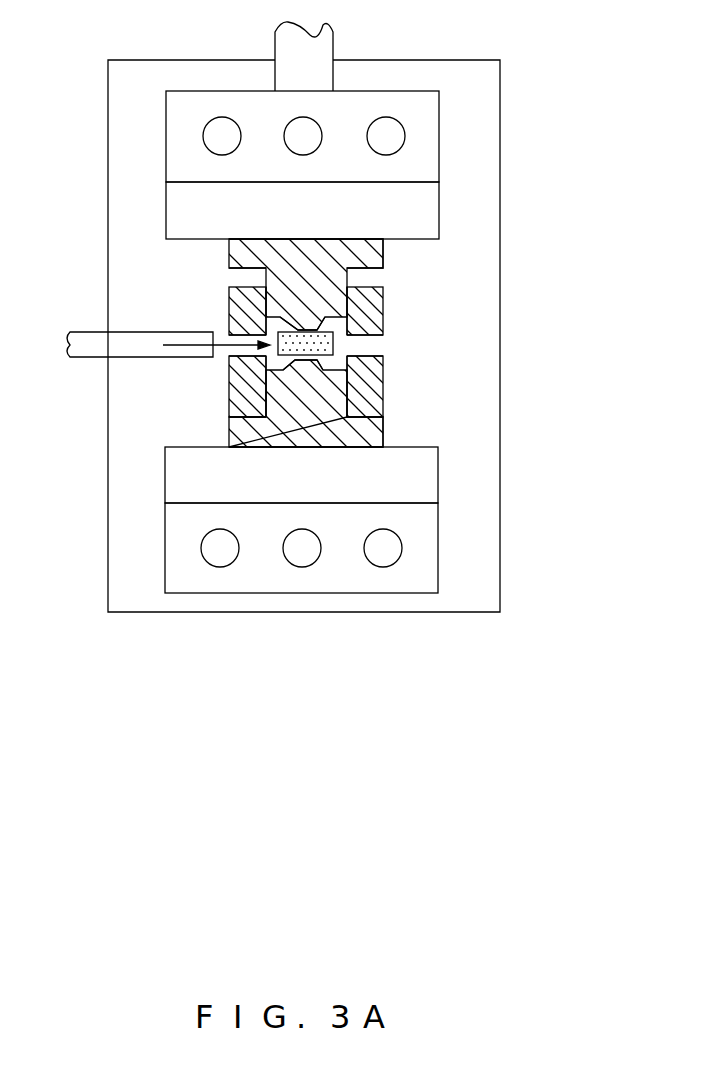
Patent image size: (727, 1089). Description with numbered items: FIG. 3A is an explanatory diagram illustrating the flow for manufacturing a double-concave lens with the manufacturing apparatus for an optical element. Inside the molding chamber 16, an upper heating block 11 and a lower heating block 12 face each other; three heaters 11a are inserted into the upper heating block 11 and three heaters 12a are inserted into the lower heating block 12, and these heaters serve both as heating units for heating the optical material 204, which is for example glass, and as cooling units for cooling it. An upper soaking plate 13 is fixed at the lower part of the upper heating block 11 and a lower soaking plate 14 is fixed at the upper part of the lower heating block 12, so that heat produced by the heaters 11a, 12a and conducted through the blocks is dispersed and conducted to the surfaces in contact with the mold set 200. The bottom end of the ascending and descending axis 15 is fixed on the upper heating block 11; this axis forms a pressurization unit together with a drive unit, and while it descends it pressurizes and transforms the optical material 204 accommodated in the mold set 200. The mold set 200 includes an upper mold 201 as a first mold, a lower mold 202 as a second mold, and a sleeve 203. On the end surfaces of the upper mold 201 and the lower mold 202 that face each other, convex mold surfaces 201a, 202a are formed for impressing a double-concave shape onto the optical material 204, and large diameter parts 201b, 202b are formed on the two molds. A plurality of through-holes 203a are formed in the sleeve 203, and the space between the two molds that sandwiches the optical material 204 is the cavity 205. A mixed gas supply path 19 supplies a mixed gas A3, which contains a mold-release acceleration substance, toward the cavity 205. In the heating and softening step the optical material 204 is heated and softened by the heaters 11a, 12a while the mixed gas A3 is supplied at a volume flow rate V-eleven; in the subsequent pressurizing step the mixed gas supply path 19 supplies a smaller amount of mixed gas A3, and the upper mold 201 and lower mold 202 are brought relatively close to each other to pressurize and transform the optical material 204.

The upper heating block 11 is at (357, 136).
The heaters 11a is at (327, 85).
The lower heating block 12 is at (356, 548).
The heaters 12a is at (273, 609).
The upper soaking plate 13 is at (357, 210).
The lower soaking plate 14 is at (356, 475).
The ascending and descending axis 15 is at (345, 47).
The molding chamber 16 is at (261, 336).
The mixed gas supply path 19 is at (140, 298).
The mold set 200 is at (354, 345).
The upper mold 201 is at (258, 284).
The convex mold surface 201a is at (322, 331).
The large diameter part 201b is at (360, 261).
The lower mold 202 is at (258, 403).
The convex mold surface 202a is at (325, 366).
The large diameter part 202b is at (362, 434).
The sleeve 203 is at (362, 352).
The through-holes 203a is at (315, 368).
The optical material 204 is at (261, 352).
The cavity 205 is at (364, 344).
The mixed gas A3 is at (203, 347).